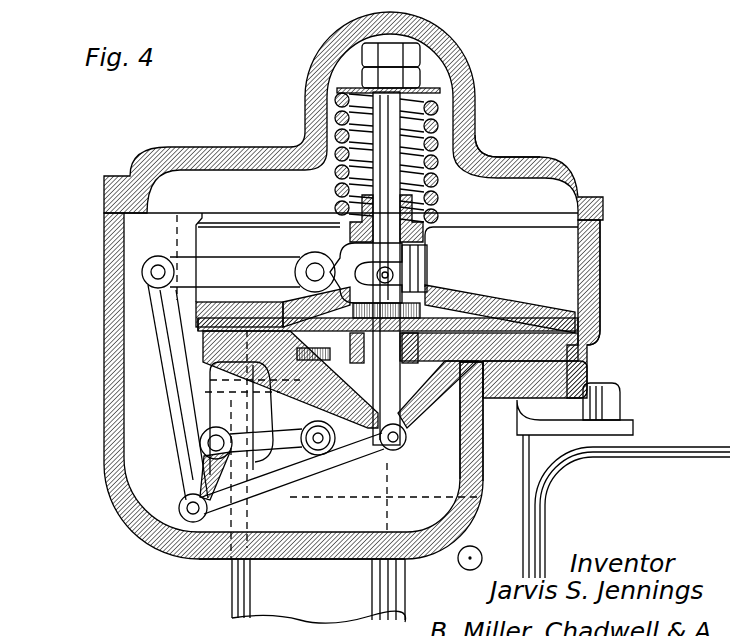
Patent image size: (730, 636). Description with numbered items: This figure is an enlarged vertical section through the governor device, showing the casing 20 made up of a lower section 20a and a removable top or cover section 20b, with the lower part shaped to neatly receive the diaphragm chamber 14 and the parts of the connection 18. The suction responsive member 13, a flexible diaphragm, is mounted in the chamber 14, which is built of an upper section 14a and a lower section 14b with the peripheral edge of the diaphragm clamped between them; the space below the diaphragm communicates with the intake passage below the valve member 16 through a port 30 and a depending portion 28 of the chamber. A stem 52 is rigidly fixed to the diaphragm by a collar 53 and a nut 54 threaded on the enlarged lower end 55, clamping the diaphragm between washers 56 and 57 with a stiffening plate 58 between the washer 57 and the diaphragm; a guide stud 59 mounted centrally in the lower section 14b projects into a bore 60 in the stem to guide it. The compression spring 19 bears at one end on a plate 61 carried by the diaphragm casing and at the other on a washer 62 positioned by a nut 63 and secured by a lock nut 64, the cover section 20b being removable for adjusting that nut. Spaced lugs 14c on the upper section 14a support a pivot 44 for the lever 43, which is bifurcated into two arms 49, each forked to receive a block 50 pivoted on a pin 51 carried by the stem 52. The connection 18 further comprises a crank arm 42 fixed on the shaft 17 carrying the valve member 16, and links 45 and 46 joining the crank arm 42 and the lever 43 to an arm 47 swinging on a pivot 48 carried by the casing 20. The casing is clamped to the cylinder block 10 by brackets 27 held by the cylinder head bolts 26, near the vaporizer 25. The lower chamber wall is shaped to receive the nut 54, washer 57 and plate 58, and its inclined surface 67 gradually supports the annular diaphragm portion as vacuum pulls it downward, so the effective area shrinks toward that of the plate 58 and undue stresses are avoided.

The cylinder block 10 is at (655, 455).
The suction responsive member 13 is at (478, 300).
The chamber 14 is at (571, 297).
The upper section 14a is at (505, 296).
The lower section 14b is at (592, 343).
The spaced lugs 14c is at (300, 258).
The valve member 16 is at (320, 447).
The shaft 17 is at (180, 559).
The connection 18 is at (148, 378).
The compression spring 19 is at (437, 123).
The casing 20 is at (606, 205).
The lower section 20a is at (598, 263).
The top or cover section 20b is at (547, 162).
The vaporizer 25 is at (510, 517).
The bolts 26 is at (618, 396).
The brackets 27 is at (632, 432).
The depending portion 28 is at (406, 472).
The port 30 is at (462, 482).
The crank arm 42 is at (367, 465).
The lever 43 is at (163, 260).
The pivot 44 is at (313, 268).
The link 45 is at (153, 534).
The link 46 is at (173, 401).
The arm 47 is at (200, 471).
The pivot 48 is at (200, 443).
The arms 49 is at (348, 243).
The block 50 is at (400, 278).
The pin 51 is at (430, 253).
The stem 52 is at (387, 147).
The collar 53 is at (415, 305).
The nut 54 is at (476, 432).
The enlarged lower end 55 is at (475, 292).
The washer 56 is at (315, 318).
The washer 57 is at (287, 308).
The stiffening plate 58 is at (500, 305).
The guide stud 59 is at (205, 349).
The bore 60 is at (205, 371).
The plate 61 is at (434, 200).
The washer 62 is at (430, 86).
The nut 63 is at (420, 72).
The lock nut 64 is at (363, 53).
The inclined surface 67 is at (470, 400).